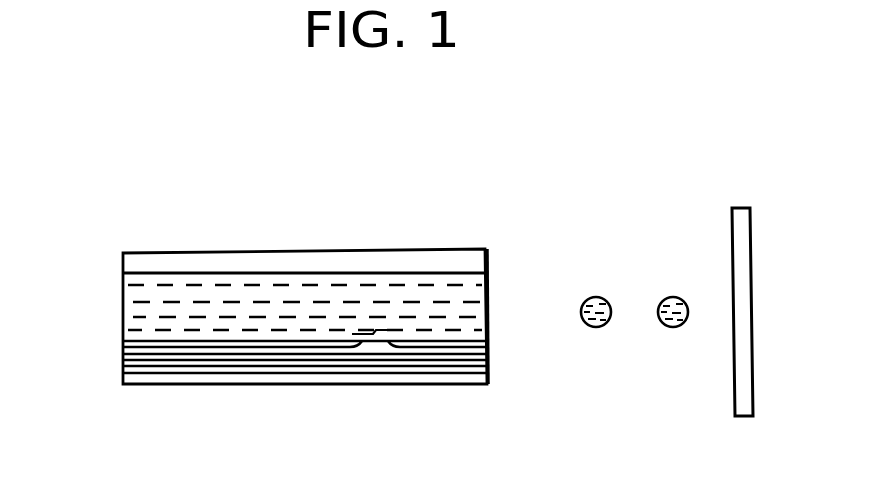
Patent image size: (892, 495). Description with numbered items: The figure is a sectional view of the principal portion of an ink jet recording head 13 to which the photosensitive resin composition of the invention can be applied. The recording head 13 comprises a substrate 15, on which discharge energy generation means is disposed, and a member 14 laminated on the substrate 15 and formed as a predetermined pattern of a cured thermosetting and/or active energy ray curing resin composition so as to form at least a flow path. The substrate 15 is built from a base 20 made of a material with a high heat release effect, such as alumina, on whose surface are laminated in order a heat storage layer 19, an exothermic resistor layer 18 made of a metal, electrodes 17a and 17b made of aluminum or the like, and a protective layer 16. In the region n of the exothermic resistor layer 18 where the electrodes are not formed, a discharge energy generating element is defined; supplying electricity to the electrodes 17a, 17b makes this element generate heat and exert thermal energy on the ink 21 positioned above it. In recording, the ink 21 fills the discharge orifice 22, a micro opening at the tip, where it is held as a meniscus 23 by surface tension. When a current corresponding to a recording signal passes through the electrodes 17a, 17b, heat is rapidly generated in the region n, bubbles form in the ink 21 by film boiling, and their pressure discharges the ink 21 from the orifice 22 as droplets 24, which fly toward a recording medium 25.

The recording head 13 is at (350, 248).
The member 14 is at (153, 266).
The ink 21 is at (227, 282).
The substrate 15 is at (115, 345).
The protective layer 16 is at (165, 346).
The electrode 17a is at (211, 356).
The electrode 17b is at (466, 355).
The exothermic resistor layer 18 is at (268, 363).
The heat storage layer 19 is at (312, 368).
The base 20 is at (418, 385).
The discharge orifice 22 is at (497, 338).
The meniscus 23 is at (488, 306).
The droplets 24 is at (685, 288).
The recording medium 25 is at (732, 233).
The region n is at (373, 314).